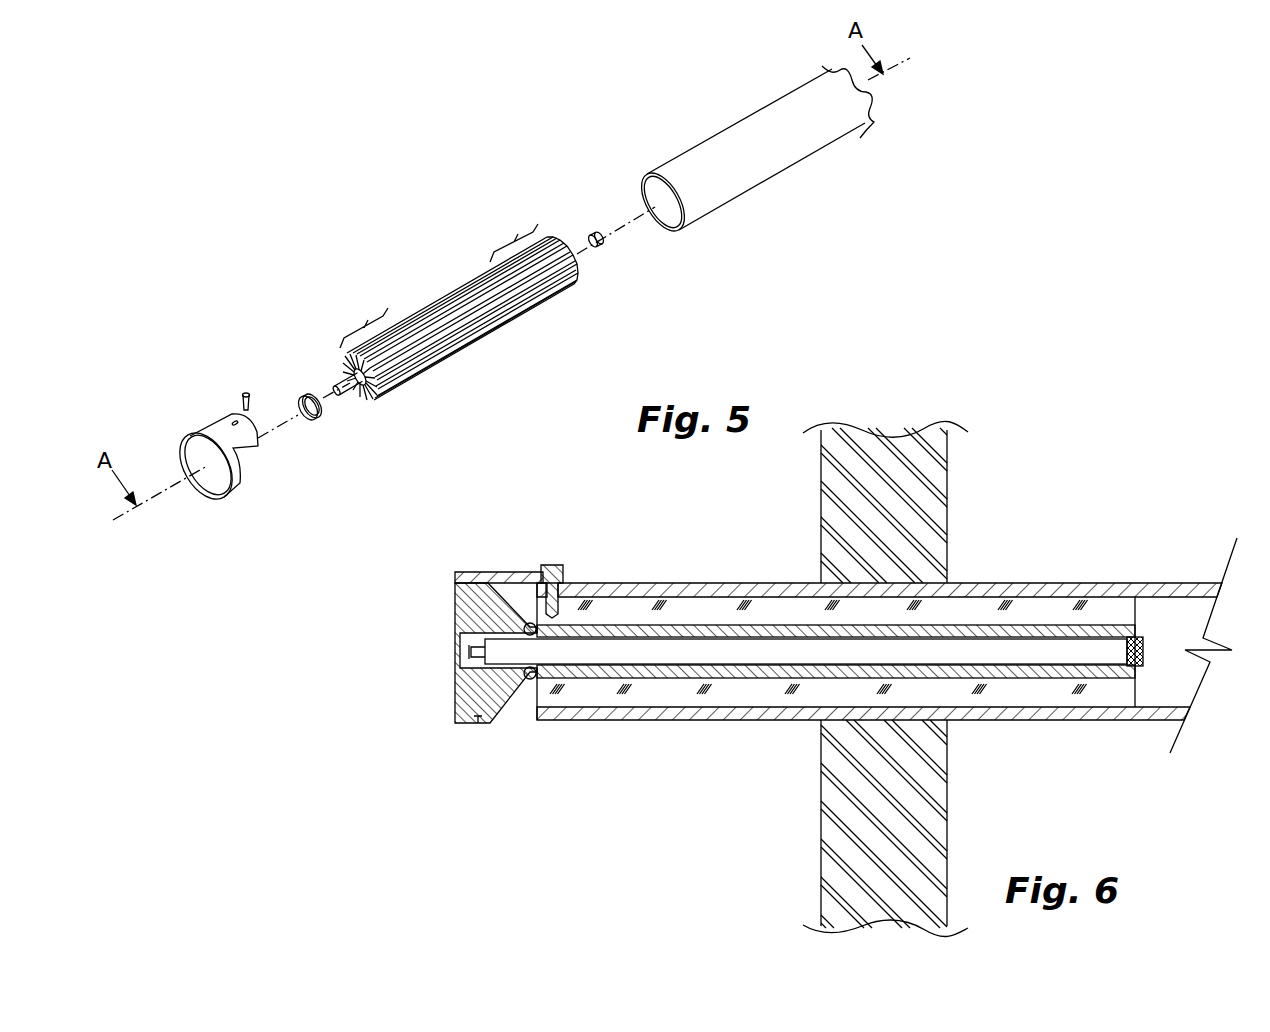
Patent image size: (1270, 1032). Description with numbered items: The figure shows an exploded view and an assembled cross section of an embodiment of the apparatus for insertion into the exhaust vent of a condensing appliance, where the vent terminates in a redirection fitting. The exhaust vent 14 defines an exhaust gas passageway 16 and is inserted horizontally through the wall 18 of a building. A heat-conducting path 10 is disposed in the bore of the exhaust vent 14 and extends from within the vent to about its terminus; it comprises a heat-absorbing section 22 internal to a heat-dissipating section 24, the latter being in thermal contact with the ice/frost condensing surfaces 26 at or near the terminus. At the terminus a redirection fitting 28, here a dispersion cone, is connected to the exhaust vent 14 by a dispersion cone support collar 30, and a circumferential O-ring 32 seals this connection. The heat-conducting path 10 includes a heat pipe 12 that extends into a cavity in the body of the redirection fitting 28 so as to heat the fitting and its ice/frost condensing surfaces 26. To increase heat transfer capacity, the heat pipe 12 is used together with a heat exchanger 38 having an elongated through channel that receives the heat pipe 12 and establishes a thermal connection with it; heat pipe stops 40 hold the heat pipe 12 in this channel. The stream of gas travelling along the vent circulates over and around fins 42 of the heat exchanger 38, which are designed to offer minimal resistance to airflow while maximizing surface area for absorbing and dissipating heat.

In FIG. 5, the heat-conducting path 10 is at (477, 362).
In FIG. 6, the heat pipe 12 is at (710, 650).
In FIG. 5, the exhaust vent 14 is at (745, 117).
In FIG. 6, the exhaust vent 14 is at (588, 721).
In FIG. 5, the exhaust gas passageway 16 is at (653, 197).
In FIG. 6, the exhaust gas passageway 16 is at (1194, 632).
In FIG. 6, the wall 18 is at (947, 517).
In FIG. 5, the heat-absorbing section 22 is at (511, 237).
In FIG. 5, the heat-dissipating section 24 is at (363, 323).
In FIG. 6, the ice/frost condensing surfaces 26 is at (560, 722).
In FIG. 5, the redirection fitting 28 is at (240, 457).
In FIG. 6, the redirection fitting 28 is at (462, 612).
In FIG. 5, the dispersion cone support collar 30 is at (212, 428).
In FIG. 6, the dispersion cone support collar 30 is at (509, 572).
In FIG. 5, the circumferential O-ring 32 is at (300, 397).
In FIG. 5, the heat exchanger 38 is at (482, 277).
In FIG. 5, the heat pipe stop 40 is at (593, 236).
In FIG. 6, the heat pipe stop 40 is at (1143, 642).
In FIG. 5, the fins 42 is at (462, 298).
In FIG. 6, the fins 42 is at (882, 619).